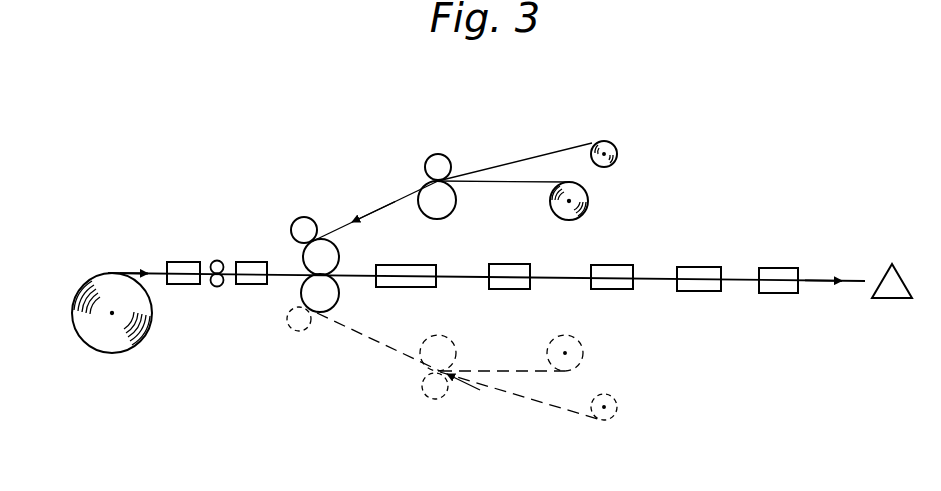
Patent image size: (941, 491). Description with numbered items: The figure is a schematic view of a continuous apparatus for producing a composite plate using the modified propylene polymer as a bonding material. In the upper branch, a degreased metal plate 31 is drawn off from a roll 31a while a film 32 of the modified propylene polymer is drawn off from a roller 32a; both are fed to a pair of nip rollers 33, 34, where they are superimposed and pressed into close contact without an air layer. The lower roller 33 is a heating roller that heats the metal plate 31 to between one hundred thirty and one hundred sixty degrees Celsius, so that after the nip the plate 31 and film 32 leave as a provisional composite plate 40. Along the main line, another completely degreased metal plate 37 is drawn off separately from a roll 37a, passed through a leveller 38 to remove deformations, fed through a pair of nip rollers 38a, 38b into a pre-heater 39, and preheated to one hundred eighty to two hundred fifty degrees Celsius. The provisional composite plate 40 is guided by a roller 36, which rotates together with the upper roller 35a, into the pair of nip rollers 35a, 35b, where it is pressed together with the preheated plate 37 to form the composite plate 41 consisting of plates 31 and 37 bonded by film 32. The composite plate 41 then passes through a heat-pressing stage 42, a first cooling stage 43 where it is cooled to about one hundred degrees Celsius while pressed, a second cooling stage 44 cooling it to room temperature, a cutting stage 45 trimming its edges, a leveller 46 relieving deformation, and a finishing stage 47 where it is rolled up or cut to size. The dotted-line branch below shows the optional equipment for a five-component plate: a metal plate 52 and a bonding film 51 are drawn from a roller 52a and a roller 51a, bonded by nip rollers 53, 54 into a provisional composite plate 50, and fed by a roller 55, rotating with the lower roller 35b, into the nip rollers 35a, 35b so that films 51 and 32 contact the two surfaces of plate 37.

The metal plate 31 is at (519, 183).
The roll 31a is at (577, 219).
The film 32 is at (598, 142).
The roller 32a is at (617, 155).
The lower nip roller 33 is at (450, 214).
The nip roller 34 is at (441, 154).
The upper nip roller 35a is at (339, 254).
The lower nip roller 35b is at (339, 297).
The roller 36 is at (303, 217).
The metal plate 37 is at (117, 273).
The roll 37a is at (100, 342).
The leveller 38 is at (180, 284).
The nip roller 38a is at (217, 260).
The nip roller 38b is at (217, 287).
The pre-heater 39 is at (250, 284).
The provisional composite plate 40 is at (373, 212).
The composite plate 41 is at (462, 278).
The heat-pressing stage 42 is at (418, 287).
The first cooling stage 43 is at (508, 289).
The second cooling stage 44 is at (607, 289).
The cutting stage 45 is at (700, 291).
The leveller 46 is at (776, 293).
The finishing stage 47 is at (892, 298).
The provisional composite plate 50 is at (355, 331).
The bonding film 51 is at (545, 403).
The roller 51a is at (615, 414).
The metal plate 52 is at (517, 370).
The roller 52a is at (583, 349).
The nip roller 53 is at (456, 348).
The nip roller 54 is at (436, 399).
The roller 55 is at (296, 331).